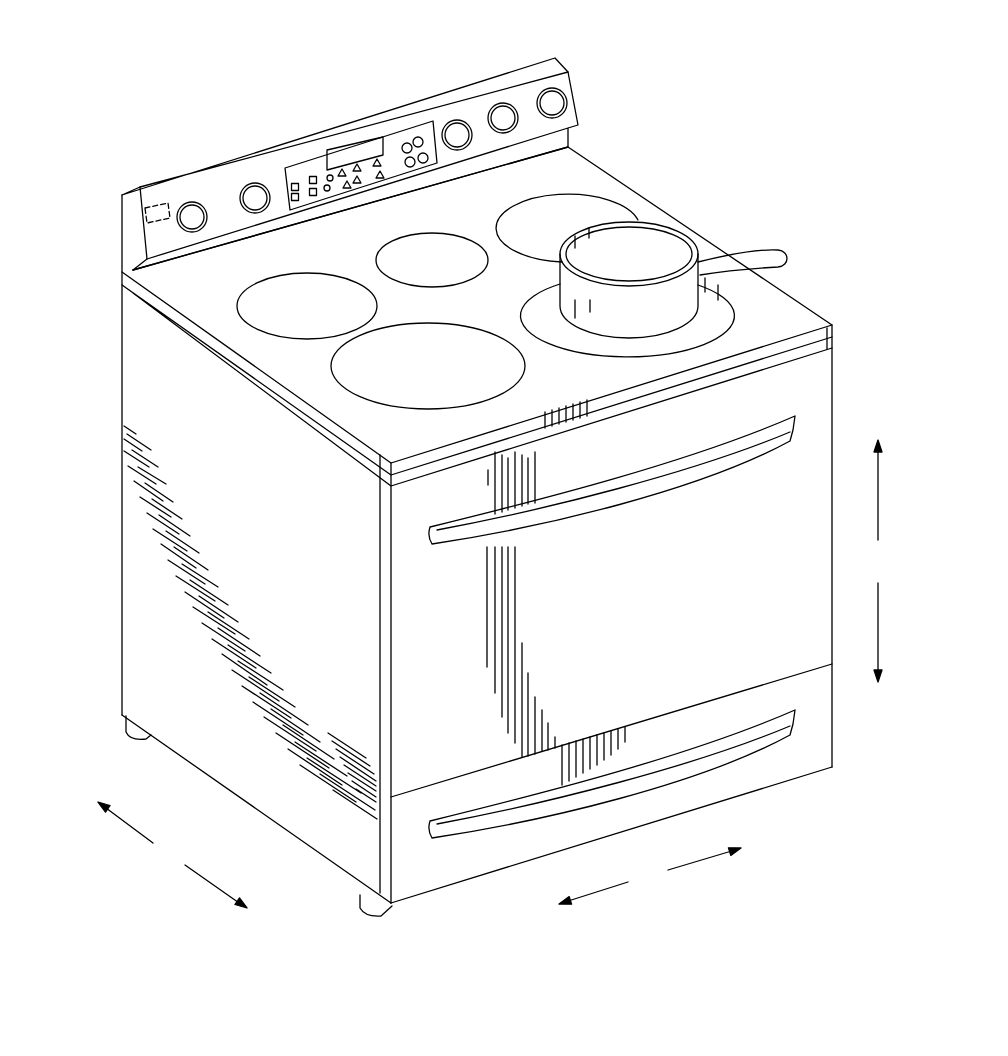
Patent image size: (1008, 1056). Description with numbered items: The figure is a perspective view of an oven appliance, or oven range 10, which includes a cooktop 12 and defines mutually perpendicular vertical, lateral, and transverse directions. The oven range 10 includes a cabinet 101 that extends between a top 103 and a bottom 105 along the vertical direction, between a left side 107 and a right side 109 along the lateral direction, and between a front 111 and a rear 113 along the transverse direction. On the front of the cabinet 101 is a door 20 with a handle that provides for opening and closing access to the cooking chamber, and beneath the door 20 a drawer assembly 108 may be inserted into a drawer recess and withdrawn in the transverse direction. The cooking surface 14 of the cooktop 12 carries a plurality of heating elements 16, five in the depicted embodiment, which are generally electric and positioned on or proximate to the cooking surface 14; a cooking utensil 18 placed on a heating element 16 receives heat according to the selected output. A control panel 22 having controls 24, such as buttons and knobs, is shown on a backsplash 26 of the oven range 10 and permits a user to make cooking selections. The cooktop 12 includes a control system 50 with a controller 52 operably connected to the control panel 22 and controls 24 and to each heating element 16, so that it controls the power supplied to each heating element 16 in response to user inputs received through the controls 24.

The oven range 10 is at (464, 505).
The cooktop 12 is at (433, 277).
The cooking surface 14 is at (437, 305).
The heating elements 16 is at (539, 287).
The cooking utensil 18 is at (673, 268).
The door 20 is at (611, 619).
The control panel 22 is at (322, 162).
The controls 24 is at (345, 137).
The backsplash 26 is at (106, 228).
The control system 50 is at (165, 174).
The controller 52 is at (320, 126).
The cabinet 101 is at (464, 555).
The top 103 is at (428, 381).
The bottom 105 is at (239, 809).
The left side 107 is at (204, 622).
The drawer assembly 108 is at (640, 817).
The right side 109 is at (870, 546).
The front 111 is at (417, 679).
The rear 113 is at (89, 455).